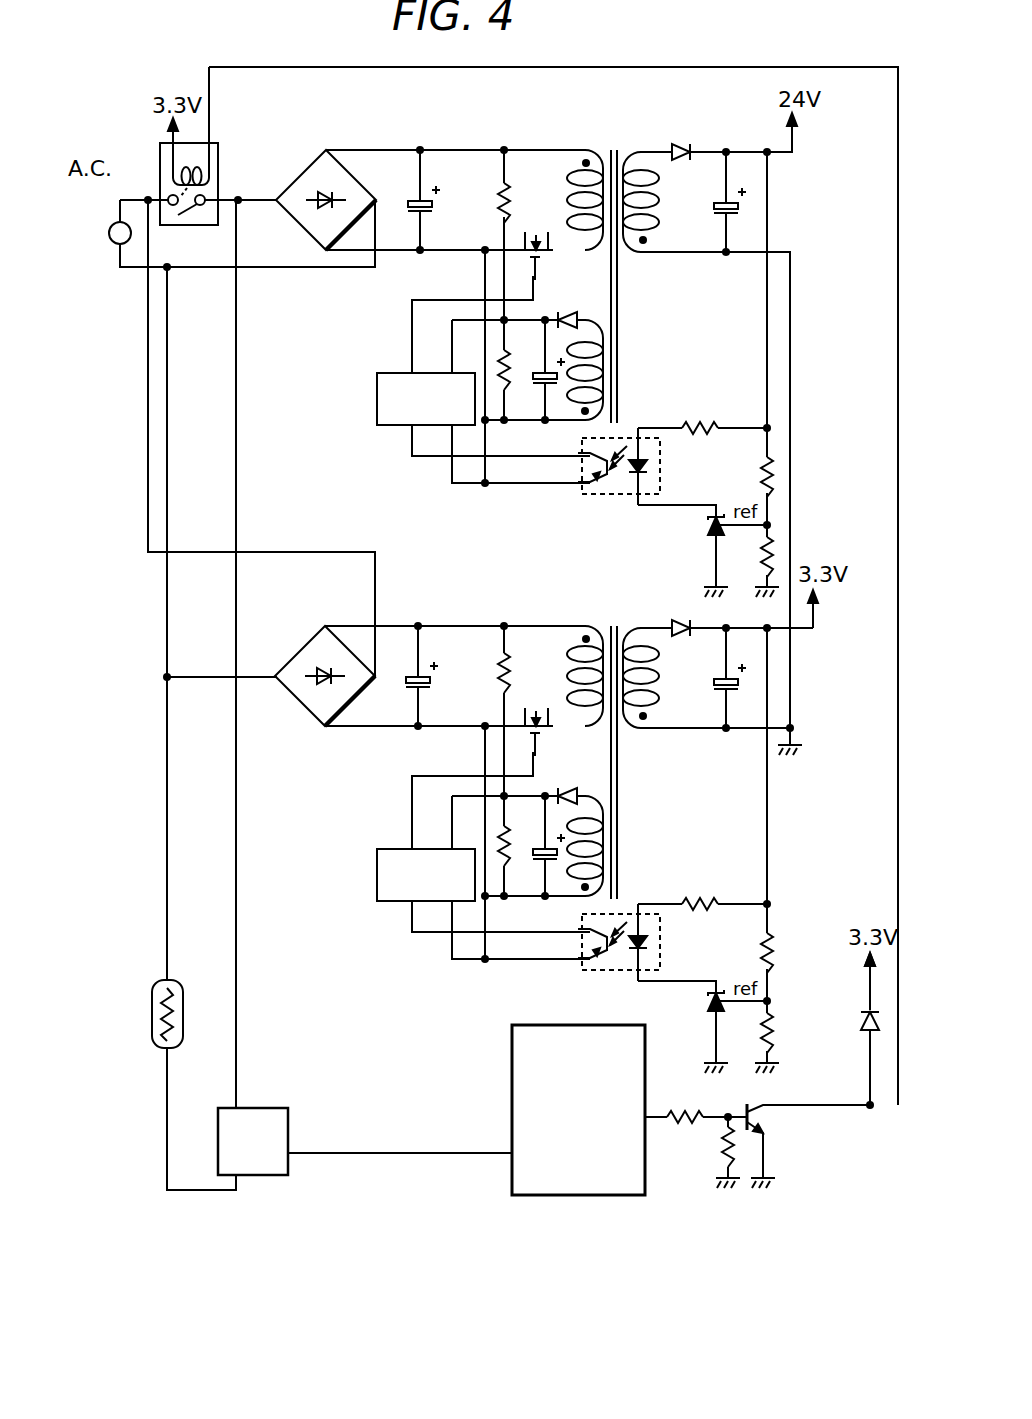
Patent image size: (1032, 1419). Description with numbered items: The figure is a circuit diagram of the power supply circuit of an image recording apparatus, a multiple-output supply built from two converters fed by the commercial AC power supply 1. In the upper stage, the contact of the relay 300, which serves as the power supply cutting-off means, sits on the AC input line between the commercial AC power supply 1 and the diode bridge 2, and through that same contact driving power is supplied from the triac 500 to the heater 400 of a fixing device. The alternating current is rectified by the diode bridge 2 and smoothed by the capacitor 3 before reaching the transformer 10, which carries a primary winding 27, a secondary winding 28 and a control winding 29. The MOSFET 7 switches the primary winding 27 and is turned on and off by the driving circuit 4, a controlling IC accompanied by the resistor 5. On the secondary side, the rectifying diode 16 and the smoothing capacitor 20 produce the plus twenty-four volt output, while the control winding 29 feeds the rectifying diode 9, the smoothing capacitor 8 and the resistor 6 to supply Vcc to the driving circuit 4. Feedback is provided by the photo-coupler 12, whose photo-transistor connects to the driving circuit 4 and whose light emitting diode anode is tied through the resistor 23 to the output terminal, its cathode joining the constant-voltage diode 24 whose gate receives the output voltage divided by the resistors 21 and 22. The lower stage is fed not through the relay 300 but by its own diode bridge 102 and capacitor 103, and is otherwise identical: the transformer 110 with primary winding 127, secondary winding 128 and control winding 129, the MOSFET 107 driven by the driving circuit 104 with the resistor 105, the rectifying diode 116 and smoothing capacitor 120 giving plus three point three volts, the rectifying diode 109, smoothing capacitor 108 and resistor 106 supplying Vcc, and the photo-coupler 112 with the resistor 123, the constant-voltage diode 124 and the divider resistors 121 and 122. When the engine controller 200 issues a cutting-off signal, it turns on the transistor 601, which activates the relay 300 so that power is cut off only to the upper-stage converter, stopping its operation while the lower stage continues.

The commercial AC power supply 1 is at (109, 228).
The diode bridge 2 is at (303, 176).
The capacitor 3 is at (410, 206).
The driving circuit 4 is at (390, 372).
The resistor 5 is at (508, 206).
The resistor 6 is at (508, 366).
The MOSFET 7 is at (556, 276).
The smoothing capacitor 8 is at (535, 384).
The rectifying diode 9 is at (576, 318).
The transformer 10 is at (614, 148).
The photo-coupler 12 is at (600, 497).
The rectifying diode 16 is at (683, 146).
The smoothing capacitor 20 is at (714, 205).
The resistor 21 is at (760, 470).
The resistor 22 is at (775, 558).
The resistor 23 is at (705, 418).
The constant-voltage diode 24 is at (707, 524).
The primary winding 27 is at (572, 216).
The secondary winding 28 is at (660, 228).
The control winding 29 is at (588, 421).
The diode bridge 102 is at (303, 652).
The capacitor 103 is at (432, 690).
The driving circuit 104 is at (390, 848).
The resistor 105 is at (508, 680).
The resistor 106 is at (508, 842).
The MOSFET 107 is at (541, 758).
The smoothing capacitor 108 is at (536, 861).
The rectifying diode 109 is at (578, 794).
The transformer 110 is at (614, 624).
The photo-coupler 112 is at (600, 973).
The rectifying diode 116 is at (683, 622).
The smoothing capacitor 120 is at (714, 681).
The resistor 121 is at (760, 946).
The resistor 122 is at (775, 1035).
The resistor 123 is at (705, 895).
The constant-voltage diode 124 is at (707, 1000).
The primary winding 127 is at (572, 692).
The secondary winding 128 is at (660, 704).
The control winding 129 is at (588, 897).
The engine controller 200 is at (640, 1196).
The relay 300 is at (160, 157).
The heater 400 is at (183, 984).
The triac 500 is at (285, 1177).
The transistor 601 is at (766, 1103).